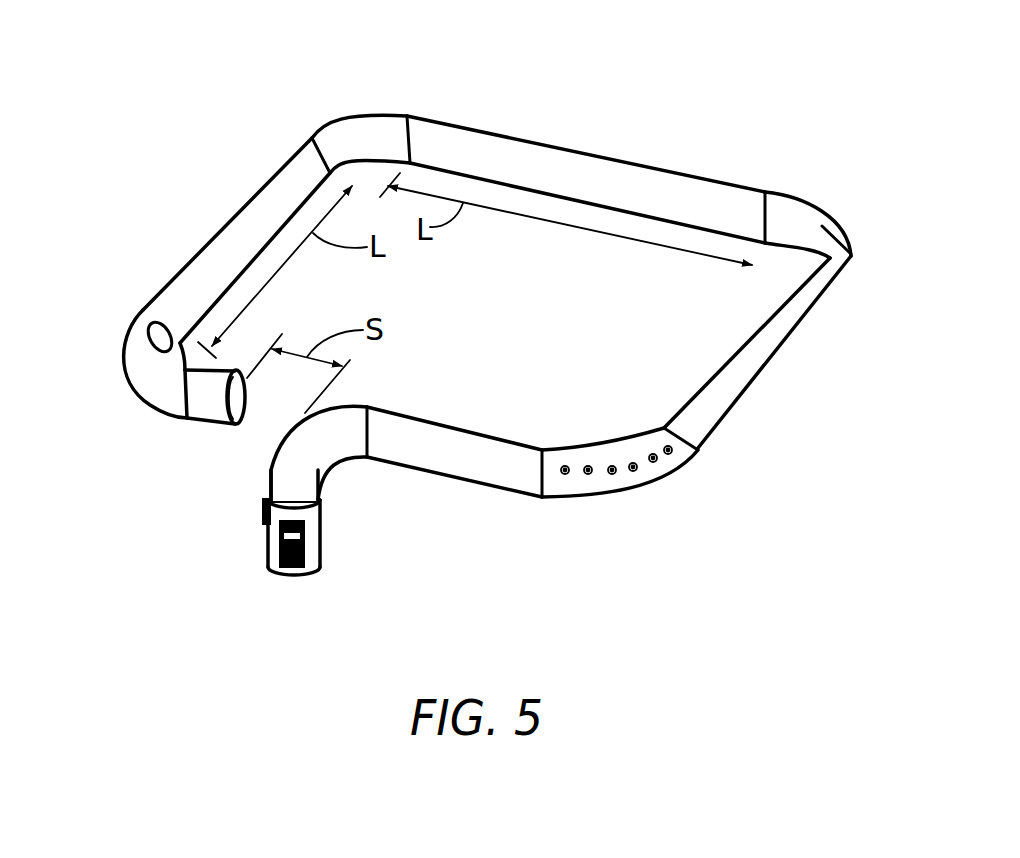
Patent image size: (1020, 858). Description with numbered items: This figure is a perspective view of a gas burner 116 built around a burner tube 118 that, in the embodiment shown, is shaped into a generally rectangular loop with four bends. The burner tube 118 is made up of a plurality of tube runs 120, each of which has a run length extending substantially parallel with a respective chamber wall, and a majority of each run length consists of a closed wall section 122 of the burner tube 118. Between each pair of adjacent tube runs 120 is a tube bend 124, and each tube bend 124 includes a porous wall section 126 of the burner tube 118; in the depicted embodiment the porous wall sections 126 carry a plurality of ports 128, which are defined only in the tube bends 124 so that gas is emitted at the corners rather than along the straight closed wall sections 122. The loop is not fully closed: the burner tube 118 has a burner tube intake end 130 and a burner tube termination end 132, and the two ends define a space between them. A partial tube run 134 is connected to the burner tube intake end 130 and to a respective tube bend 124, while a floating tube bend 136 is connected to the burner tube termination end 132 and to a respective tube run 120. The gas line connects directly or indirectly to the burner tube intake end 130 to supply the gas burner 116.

The gas burner 116 is at (823, 102).
The burner tube 118 is at (283, 474).
The tube run 120 is at (597, 177).
The closed wall section 122 is at (517, 130).
The tube bend 124 is at (347, 130).
The porous wall section 126 is at (367, 110).
The port 128 is at (675, 422).
The burner tube intake end 130 is at (287, 580).
The burner tube termination end 132 is at (204, 430).
The partial tube run 134 is at (266, 540).
The floating tube bend 136 is at (151, 386).